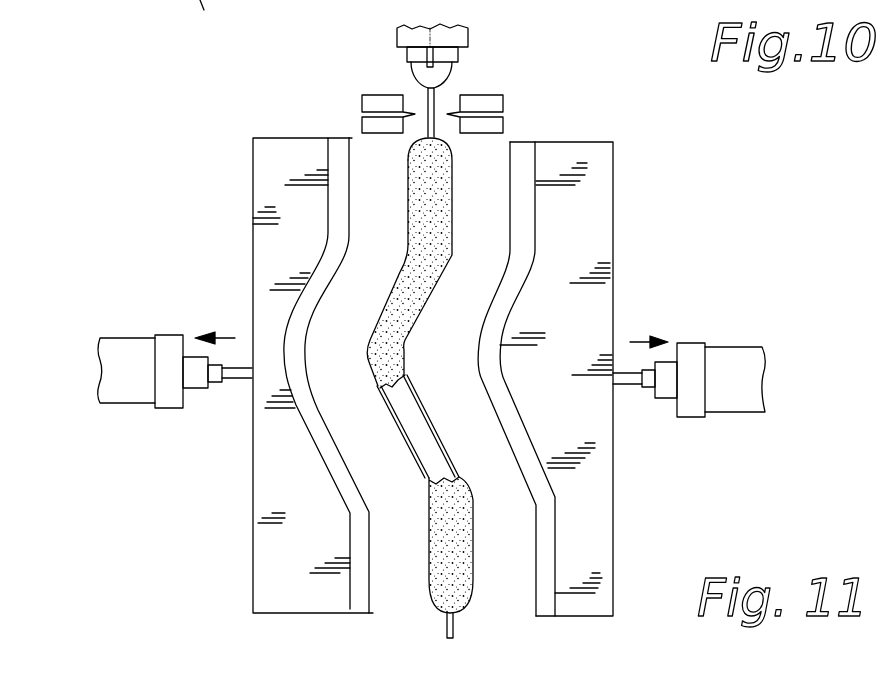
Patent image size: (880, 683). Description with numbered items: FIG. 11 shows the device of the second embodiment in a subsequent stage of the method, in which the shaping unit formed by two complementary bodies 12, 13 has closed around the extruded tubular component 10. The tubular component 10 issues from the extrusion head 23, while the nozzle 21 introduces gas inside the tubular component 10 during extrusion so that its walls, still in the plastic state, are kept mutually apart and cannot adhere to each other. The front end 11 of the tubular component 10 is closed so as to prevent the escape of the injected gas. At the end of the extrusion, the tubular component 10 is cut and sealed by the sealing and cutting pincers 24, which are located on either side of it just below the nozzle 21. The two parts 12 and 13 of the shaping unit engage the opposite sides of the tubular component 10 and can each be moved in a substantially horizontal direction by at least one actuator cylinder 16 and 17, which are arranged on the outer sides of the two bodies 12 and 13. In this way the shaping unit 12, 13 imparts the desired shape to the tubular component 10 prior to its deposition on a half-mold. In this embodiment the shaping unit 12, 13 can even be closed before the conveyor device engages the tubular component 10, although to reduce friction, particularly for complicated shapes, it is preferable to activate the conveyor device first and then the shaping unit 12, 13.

The tubular component 10 is at (437, 238).
The end 11 is at (455, 623).
The shaping unit part 12 is at (313, 490).
The shaping unit part 13 is at (582, 285).
The actuator cylinder 16 is at (123, 395).
The actuator cylinder 17 is at (725, 362).
The nozzle 21 is at (435, 34).
The extrusion head 23 is at (410, 55).
The sealing and cutting pincers 24 is at (382, 103).